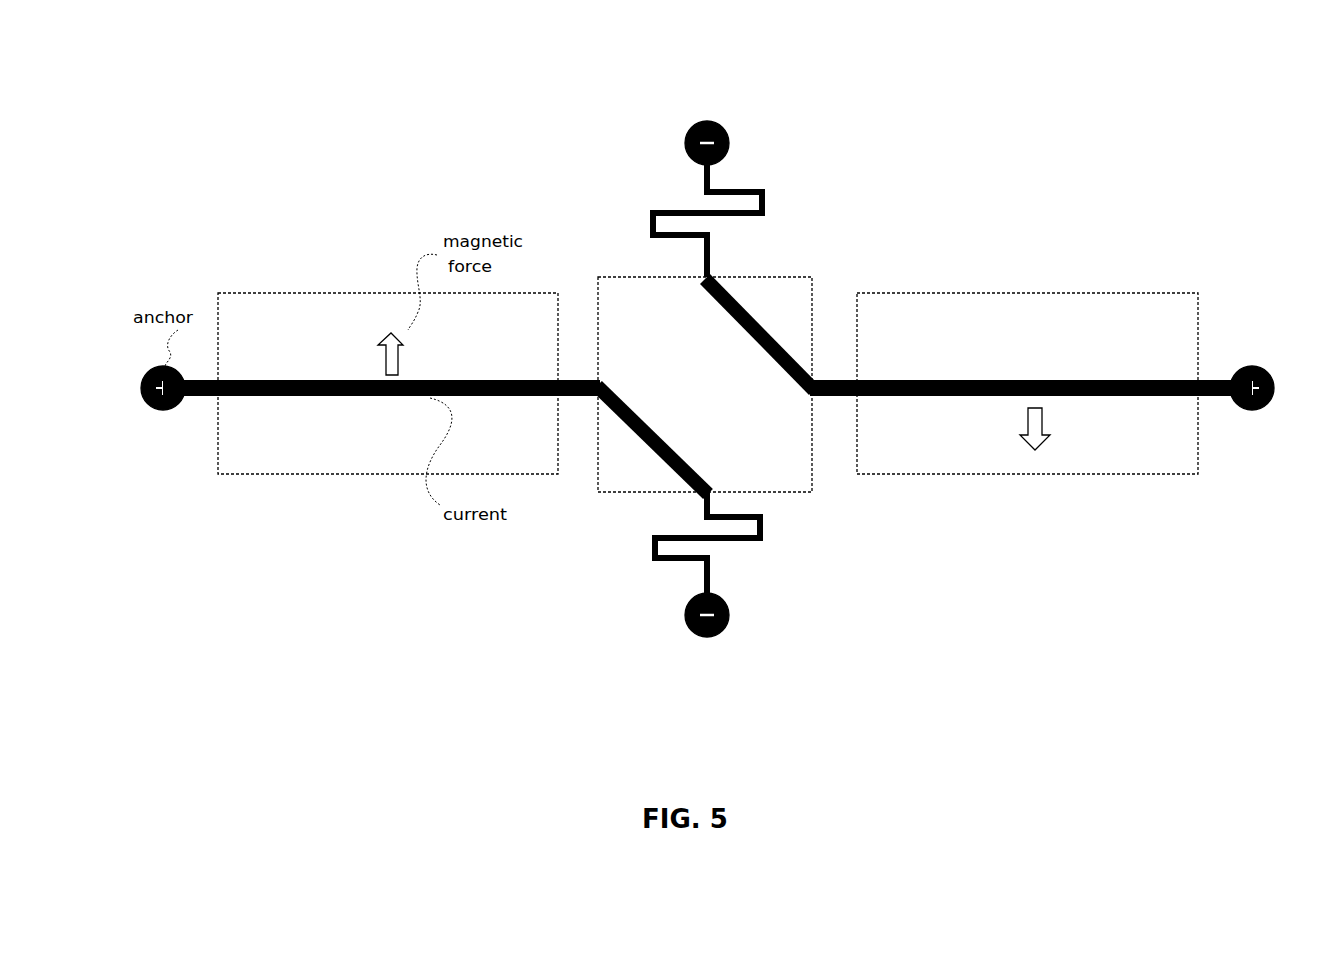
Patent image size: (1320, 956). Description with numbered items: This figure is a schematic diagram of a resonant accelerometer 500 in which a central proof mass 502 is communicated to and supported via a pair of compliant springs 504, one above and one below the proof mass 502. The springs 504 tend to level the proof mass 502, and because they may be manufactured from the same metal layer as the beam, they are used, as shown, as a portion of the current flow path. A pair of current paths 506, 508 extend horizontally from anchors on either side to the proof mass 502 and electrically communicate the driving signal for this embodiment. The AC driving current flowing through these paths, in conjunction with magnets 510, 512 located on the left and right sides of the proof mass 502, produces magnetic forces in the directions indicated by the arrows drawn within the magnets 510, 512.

The accelerometer 500 is at (199, 88).
The proof mass 502 is at (705, 385).
The compliant springs 504 is at (765, 203).
The current path 506 is at (304, 398).
The current path 508 is at (943, 400).
The magnet 510 is at (218, 474).
The magnet 512 is at (1155, 476).